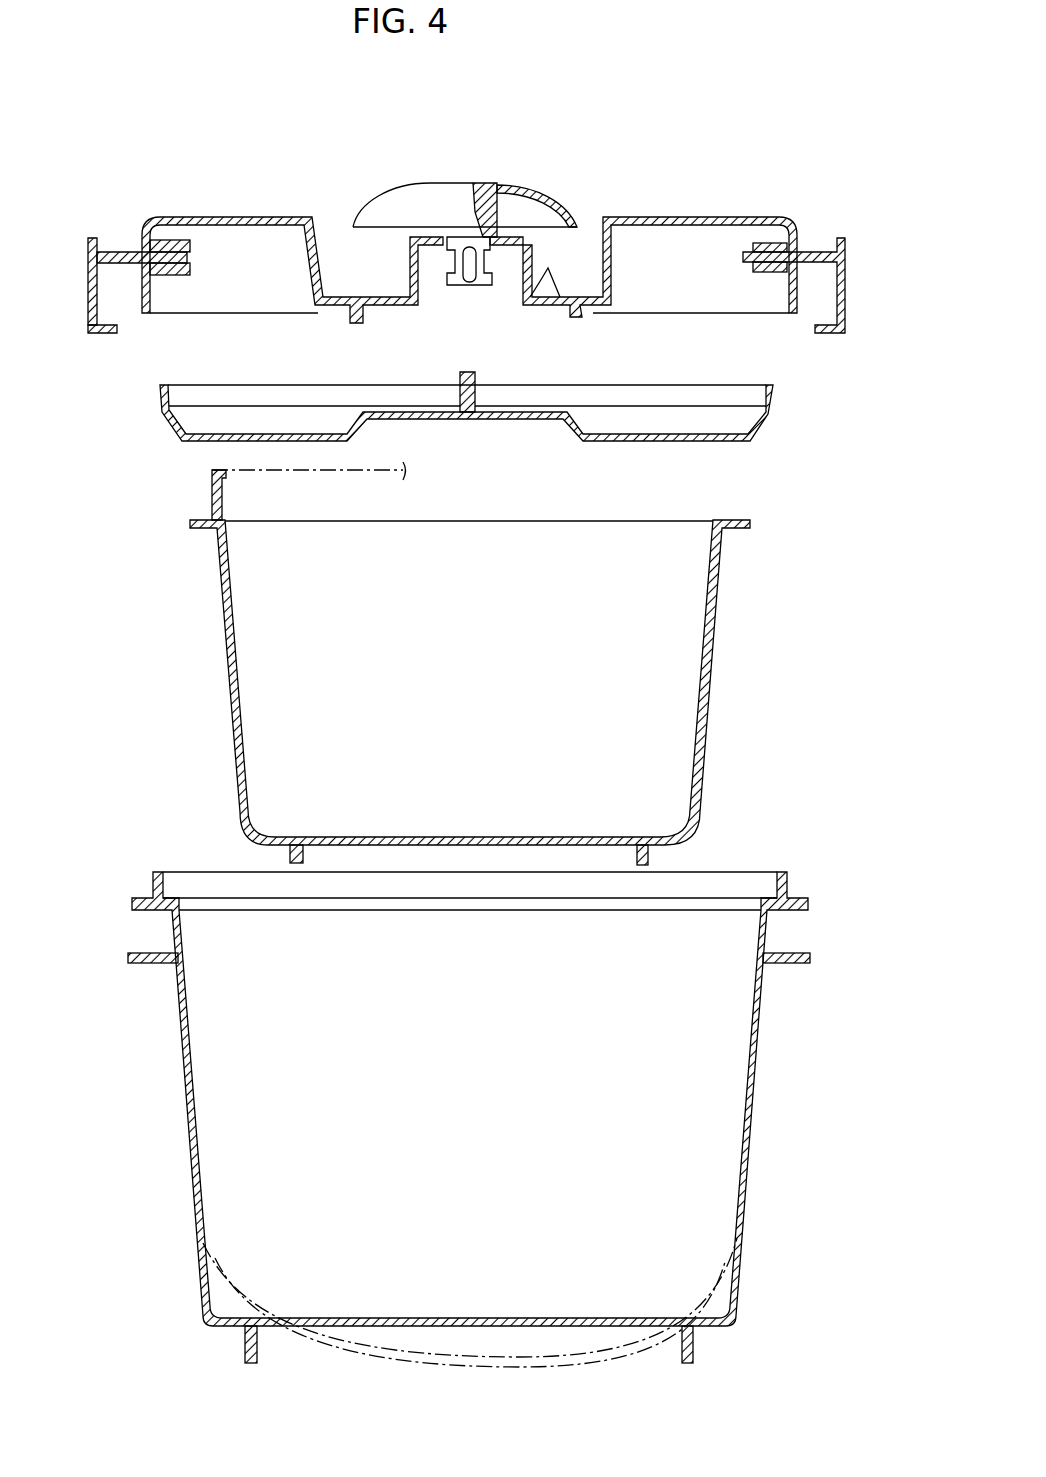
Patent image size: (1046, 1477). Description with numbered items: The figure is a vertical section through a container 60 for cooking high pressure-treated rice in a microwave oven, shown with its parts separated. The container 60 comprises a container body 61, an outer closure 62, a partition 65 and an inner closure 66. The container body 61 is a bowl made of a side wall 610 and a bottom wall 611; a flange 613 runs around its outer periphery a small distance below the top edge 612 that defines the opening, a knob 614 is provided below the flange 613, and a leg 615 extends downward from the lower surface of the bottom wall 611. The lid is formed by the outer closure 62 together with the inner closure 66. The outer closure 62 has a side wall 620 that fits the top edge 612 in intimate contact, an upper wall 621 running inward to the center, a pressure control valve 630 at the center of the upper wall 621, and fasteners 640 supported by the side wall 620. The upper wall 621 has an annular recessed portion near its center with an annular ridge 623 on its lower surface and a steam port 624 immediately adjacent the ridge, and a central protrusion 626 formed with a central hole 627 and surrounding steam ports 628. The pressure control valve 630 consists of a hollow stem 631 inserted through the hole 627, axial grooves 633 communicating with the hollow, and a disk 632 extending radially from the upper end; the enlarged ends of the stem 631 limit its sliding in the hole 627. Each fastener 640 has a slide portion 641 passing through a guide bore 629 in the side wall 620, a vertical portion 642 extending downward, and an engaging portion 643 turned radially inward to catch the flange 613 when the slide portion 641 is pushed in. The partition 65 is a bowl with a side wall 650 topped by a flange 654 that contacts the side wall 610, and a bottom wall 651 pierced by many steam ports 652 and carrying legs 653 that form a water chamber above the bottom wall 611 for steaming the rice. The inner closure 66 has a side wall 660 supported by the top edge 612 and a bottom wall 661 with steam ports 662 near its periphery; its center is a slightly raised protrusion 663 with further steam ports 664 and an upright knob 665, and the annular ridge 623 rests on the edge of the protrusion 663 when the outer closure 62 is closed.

The container 60 is at (823, 152).
The container body 61 is at (812, 1108).
The outer closure 62 is at (871, 240).
The partition 65 is at (793, 662).
The inner closure 66 is at (797, 410).
The side wall 610 is at (758, 1057).
The bottom wall 611 is at (520, 1318).
The top edge 612 is at (795, 875).
The flange 613 is at (793, 897).
The knob 614 is at (783, 952).
The leg 615 is at (698, 1342).
The side wall 620 is at (803, 292).
The upper wall 621 is at (712, 217).
The annular ridge 623 is at (583, 313).
The steam port 624 is at (559, 266).
The central protrusion 626 is at (512, 233).
The hole 627 is at (517, 275).
The steam ports 628 is at (437, 233).
The guide bore 629 is at (167, 243).
The pressure control valve 630 is at (553, 157).
The stem 631 is at (445, 270).
The disk 632 is at (557, 195).
The grooves 633 is at (468, 278).
The fastener 640 is at (62, 208).
The slide portion 641 is at (117, 252).
The vertical portion 642 is at (88, 290).
The engaging portion 643 is at (98, 333).
The side wall 650 is at (710, 702).
The bottom wall 651 is at (488, 833).
The steam ports 652 is at (397, 835).
The legs 653 is at (292, 852).
The flange 654 is at (193, 532).
The side wall 660 is at (762, 415).
The bottom wall 661 is at (645, 441).
The steam ports 662 is at (698, 441).
The protrusion 663 is at (545, 421).
The steam ports 664 is at (495, 421).
The knob 665 is at (460, 373).